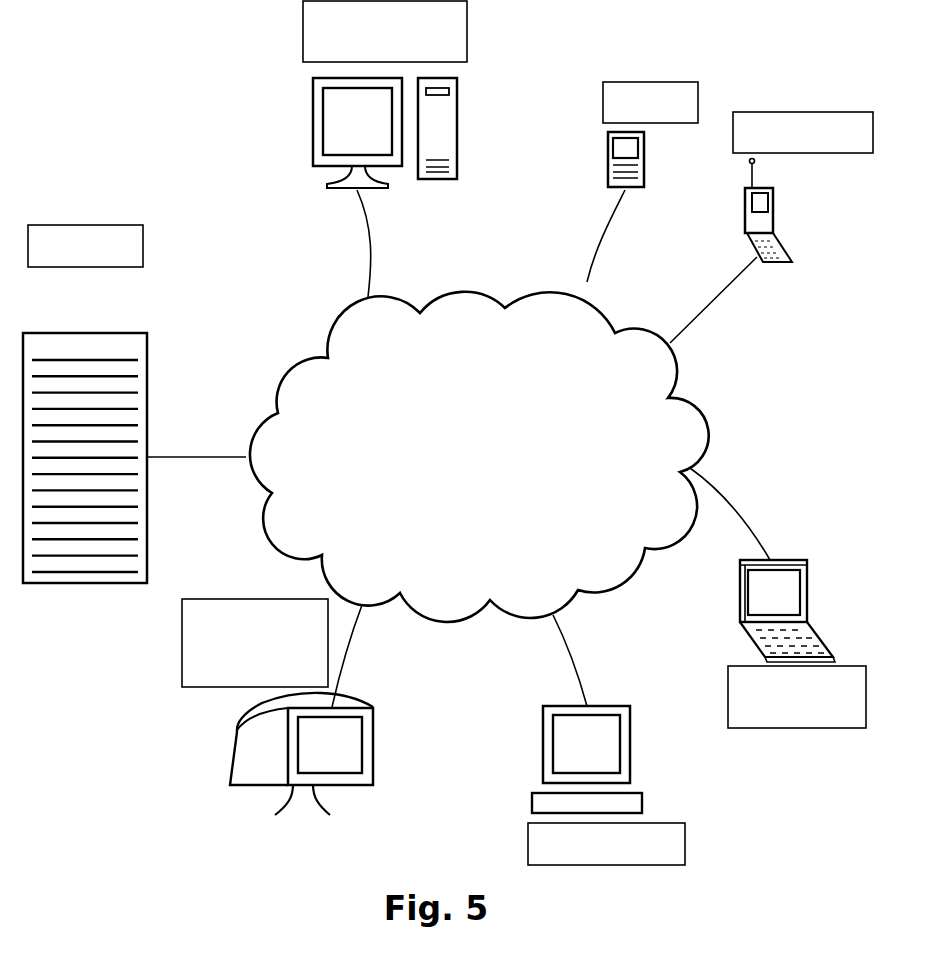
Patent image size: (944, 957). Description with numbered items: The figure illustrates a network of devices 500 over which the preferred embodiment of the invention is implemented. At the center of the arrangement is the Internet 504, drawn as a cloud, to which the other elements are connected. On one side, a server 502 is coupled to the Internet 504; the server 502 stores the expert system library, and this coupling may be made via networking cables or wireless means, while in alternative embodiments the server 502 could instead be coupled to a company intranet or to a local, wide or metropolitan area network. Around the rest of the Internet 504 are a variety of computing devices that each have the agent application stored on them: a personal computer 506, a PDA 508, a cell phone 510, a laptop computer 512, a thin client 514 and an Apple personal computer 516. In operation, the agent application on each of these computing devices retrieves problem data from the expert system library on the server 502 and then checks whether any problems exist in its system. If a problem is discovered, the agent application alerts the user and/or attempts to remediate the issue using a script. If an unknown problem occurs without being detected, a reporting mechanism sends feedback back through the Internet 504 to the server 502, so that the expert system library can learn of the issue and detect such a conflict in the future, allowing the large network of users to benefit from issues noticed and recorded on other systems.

The network of devices 500 is at (160, 125).
The server 502 is at (95, 333).
The Internet 504 is at (290, 372).
The personal computer 506 is at (457, 127).
The PDA 508 is at (644, 152).
The cell phone 510 is at (773, 212).
The laptop computer 512 is at (807, 585).
The thin client 514 is at (630, 738).
The Apple personal computer 516 is at (373, 743).